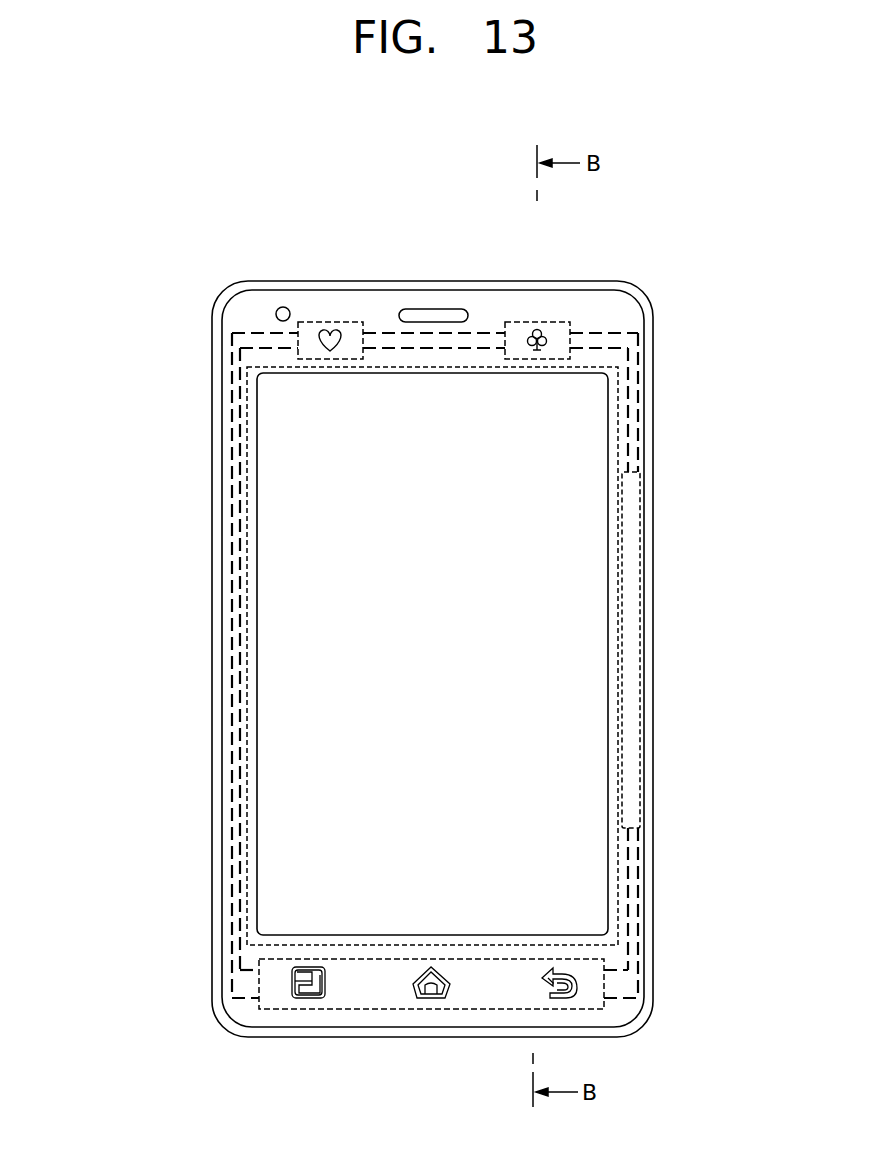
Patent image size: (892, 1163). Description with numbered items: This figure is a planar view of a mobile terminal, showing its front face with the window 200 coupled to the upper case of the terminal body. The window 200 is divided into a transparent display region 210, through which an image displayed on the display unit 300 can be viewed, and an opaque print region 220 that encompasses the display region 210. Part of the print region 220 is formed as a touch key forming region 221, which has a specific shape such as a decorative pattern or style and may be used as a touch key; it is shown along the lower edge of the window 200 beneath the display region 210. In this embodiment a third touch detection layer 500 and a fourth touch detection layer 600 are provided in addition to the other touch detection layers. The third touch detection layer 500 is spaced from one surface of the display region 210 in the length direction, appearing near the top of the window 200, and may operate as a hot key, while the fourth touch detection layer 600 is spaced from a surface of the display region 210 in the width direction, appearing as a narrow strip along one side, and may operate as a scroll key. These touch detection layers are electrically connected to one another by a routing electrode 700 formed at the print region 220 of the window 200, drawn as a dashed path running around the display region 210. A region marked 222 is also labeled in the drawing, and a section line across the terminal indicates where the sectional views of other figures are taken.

The window 200 is at (128, 505).
The display region 210 is at (277, 513).
The print region 220 is at (226, 608).
The touch key forming region 221 is at (306, 1000).
The second touch sensing region 222 is at (538, 322).
The display unit 300 is at (246, 716).
The third touch detection layer 500 is at (513, 332).
The fourth touch detection layer 600 is at (633, 663).
The routing electrode 700 is at (233, 403).